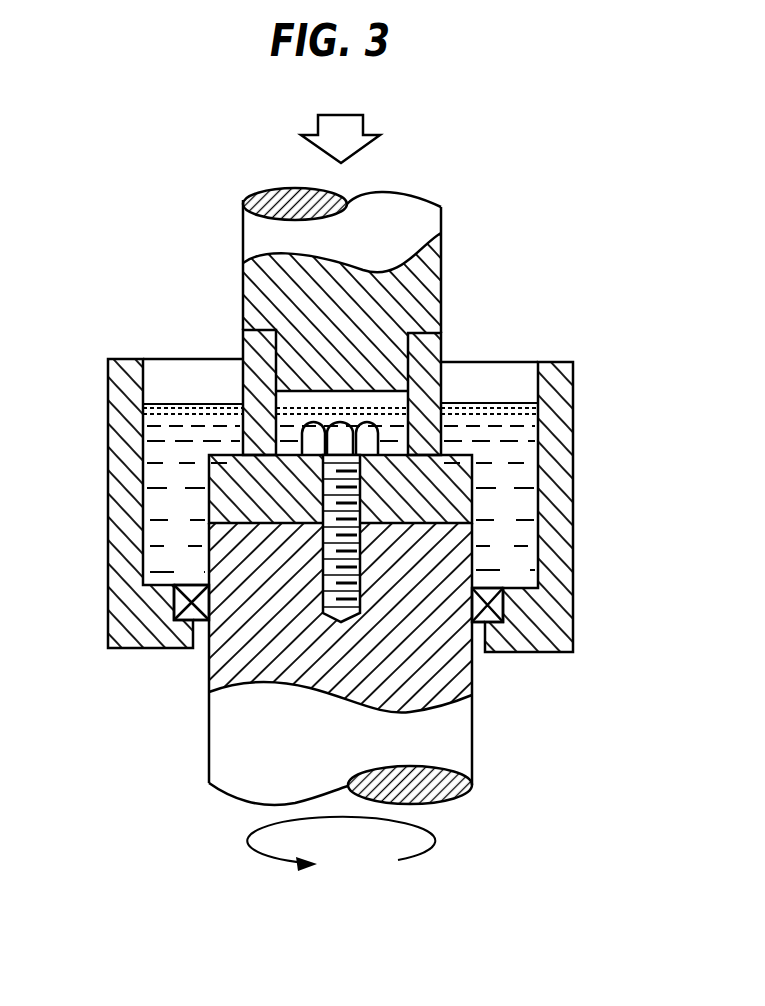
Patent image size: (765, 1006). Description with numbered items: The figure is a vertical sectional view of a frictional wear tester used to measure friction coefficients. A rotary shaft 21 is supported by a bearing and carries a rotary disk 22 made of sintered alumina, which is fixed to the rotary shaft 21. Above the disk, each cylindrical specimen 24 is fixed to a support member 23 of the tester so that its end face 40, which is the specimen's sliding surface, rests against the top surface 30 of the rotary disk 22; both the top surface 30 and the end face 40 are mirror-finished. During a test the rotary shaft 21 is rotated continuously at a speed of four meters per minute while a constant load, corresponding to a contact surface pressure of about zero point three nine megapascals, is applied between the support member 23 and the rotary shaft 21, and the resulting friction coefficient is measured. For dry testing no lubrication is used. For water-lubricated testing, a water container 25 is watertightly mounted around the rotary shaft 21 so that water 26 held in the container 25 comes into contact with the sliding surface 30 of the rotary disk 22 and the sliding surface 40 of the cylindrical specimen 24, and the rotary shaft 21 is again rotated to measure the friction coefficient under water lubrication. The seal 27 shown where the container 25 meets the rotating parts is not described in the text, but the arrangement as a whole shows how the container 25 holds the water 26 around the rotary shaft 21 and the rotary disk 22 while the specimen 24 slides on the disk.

The rotary shaft 21 is at (222, 735).
The rotary disk 22 is at (457, 479).
The support member 23 is at (410, 243).
The cylindrical specimen 24 is at (257, 377).
The water container 25 is at (123, 548).
The water 26 is at (157, 445).
The seal 27 is at (500, 605).
The top surface 30 is at (212, 492).
The end face 40 is at (233, 478).